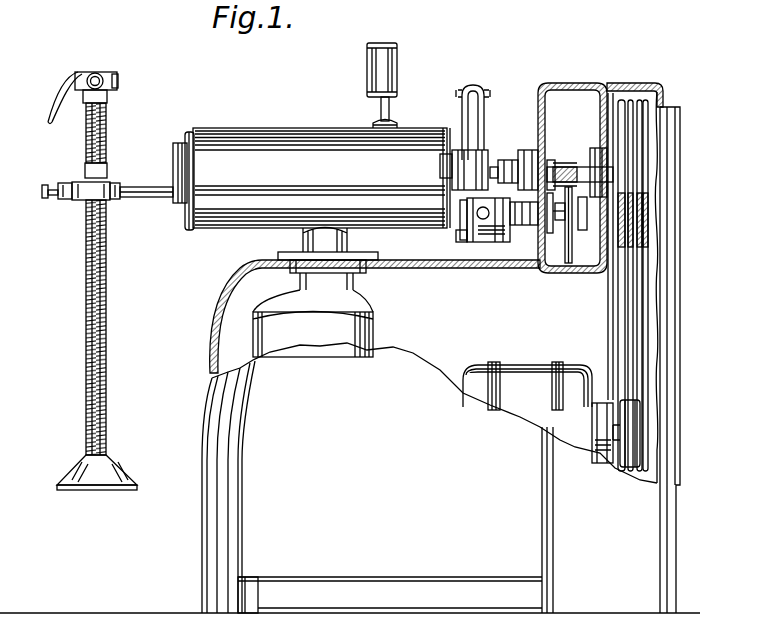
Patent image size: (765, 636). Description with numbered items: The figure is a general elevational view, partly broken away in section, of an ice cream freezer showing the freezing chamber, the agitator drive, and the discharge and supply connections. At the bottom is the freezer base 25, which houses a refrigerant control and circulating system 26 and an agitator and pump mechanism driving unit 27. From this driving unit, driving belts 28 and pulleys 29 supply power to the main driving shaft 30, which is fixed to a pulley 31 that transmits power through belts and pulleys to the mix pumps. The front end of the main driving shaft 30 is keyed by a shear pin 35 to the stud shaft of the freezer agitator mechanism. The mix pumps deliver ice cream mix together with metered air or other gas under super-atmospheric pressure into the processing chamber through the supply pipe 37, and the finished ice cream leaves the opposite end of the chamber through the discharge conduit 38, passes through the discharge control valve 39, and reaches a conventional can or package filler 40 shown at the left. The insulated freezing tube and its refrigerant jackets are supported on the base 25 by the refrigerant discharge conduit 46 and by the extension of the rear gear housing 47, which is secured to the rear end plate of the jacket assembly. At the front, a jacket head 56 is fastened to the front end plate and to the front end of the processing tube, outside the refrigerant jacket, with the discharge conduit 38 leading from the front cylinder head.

The freezer base 25 is at (255, 528).
The refrigerant control and circulating system 26 is at (360, 328).
The agitator and pump mechanism driving unit 27 is at (517, 380).
The driving belts 28 is at (627, 332).
The pulleys 29 is at (609, 268).
The main driving shaft 30 is at (507, 163).
The pulley 31 is at (568, 160).
The shear pin 35 is at (502, 173).
The supply pipe 37 is at (488, 107).
The discharge conduit 38 is at (138, 186).
The discharge control valve 39 is at (90, 196).
The can filler or package filler 40 is at (86, 349).
The refrigerant discharge conduit 46 is at (312, 240).
The rear gear housing 47 is at (460, 218).
The jacket head 56 is at (194, 131).